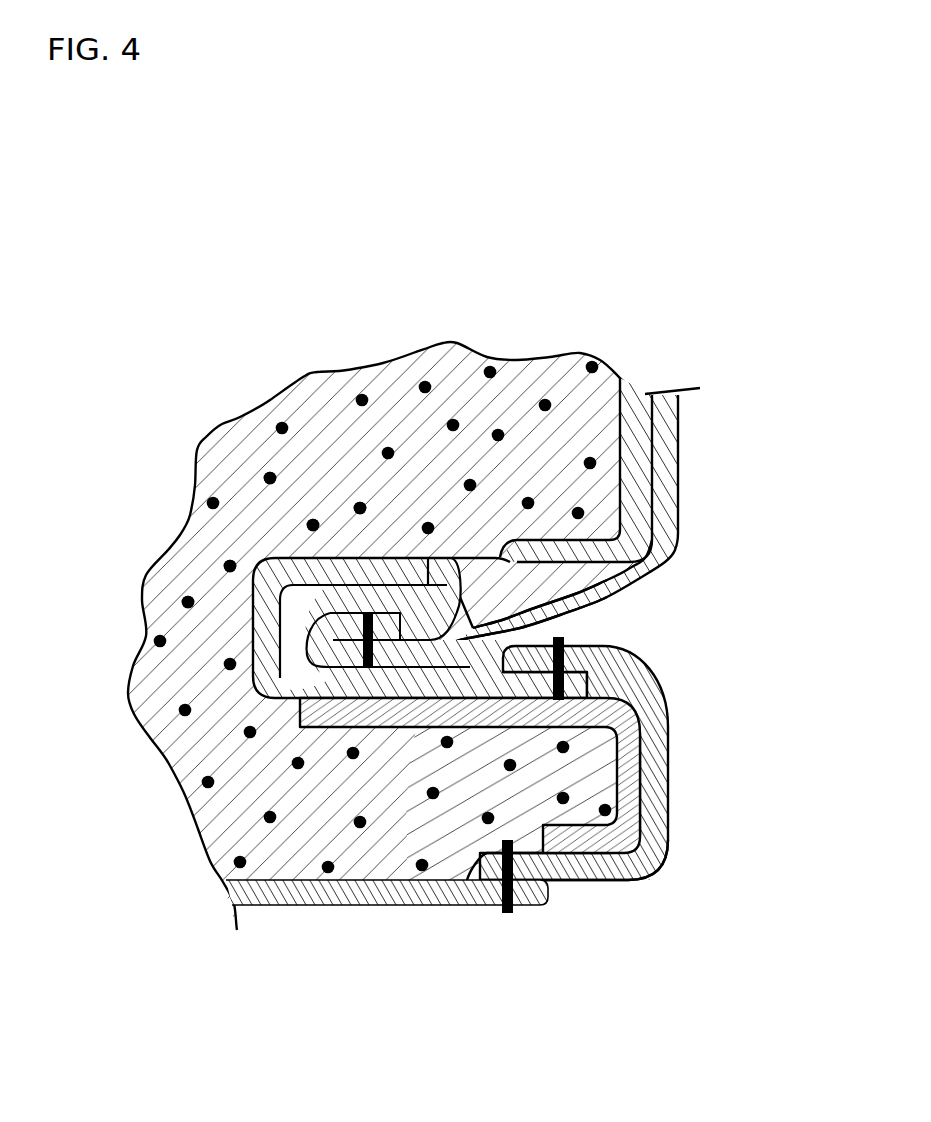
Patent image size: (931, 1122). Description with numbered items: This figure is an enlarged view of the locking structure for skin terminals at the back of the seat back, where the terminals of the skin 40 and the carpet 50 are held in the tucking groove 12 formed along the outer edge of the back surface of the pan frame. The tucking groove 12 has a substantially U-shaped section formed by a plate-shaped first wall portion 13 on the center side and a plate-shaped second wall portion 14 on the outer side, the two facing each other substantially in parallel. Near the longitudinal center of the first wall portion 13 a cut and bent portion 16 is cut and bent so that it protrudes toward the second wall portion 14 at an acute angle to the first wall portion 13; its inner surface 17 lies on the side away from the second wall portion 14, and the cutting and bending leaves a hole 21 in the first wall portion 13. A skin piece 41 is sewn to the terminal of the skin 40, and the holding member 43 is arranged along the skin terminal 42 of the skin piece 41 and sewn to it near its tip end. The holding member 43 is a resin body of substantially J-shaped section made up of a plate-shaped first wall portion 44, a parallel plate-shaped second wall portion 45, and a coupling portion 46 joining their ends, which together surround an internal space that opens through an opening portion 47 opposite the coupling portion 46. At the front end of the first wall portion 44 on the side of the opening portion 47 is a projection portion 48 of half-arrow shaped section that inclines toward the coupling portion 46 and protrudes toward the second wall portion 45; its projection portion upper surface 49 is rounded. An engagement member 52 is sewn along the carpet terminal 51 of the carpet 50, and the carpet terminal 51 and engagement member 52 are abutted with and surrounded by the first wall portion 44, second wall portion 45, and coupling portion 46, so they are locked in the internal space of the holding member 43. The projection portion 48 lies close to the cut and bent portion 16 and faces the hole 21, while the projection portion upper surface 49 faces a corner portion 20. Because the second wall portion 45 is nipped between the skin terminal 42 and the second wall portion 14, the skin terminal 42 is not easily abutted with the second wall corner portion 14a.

The tucking groove 12 is at (693, 633).
The first wall portion 13 is at (370, 572).
The second wall portion 14 is at (440, 713).
The second wall corner portion 14a is at (623, 730).
The cut and bent portion 16 is at (620, 614).
The inner surface 17 is at (590, 577).
The corner portion 20 is at (600, 526).
The hole 21 is at (450, 563).
The skin 40 is at (280, 893).
The skin piece 41 is at (640, 860).
The skin terminal 42 is at (650, 668).
The holding member 43 is at (295, 648).
The first wall portion 44 is at (340, 593).
The second wall portion 45 is at (280, 640).
The coupling portion 46 is at (293, 627).
The opening portion 47 is at (400, 685).
The projection portion 48 is at (428, 604).
The projection portion upper surface 49 is at (441, 588).
The carpet 50 is at (678, 412).
The carpet terminal 51 is at (640, 583).
The engagement member 52 is at (294, 612).